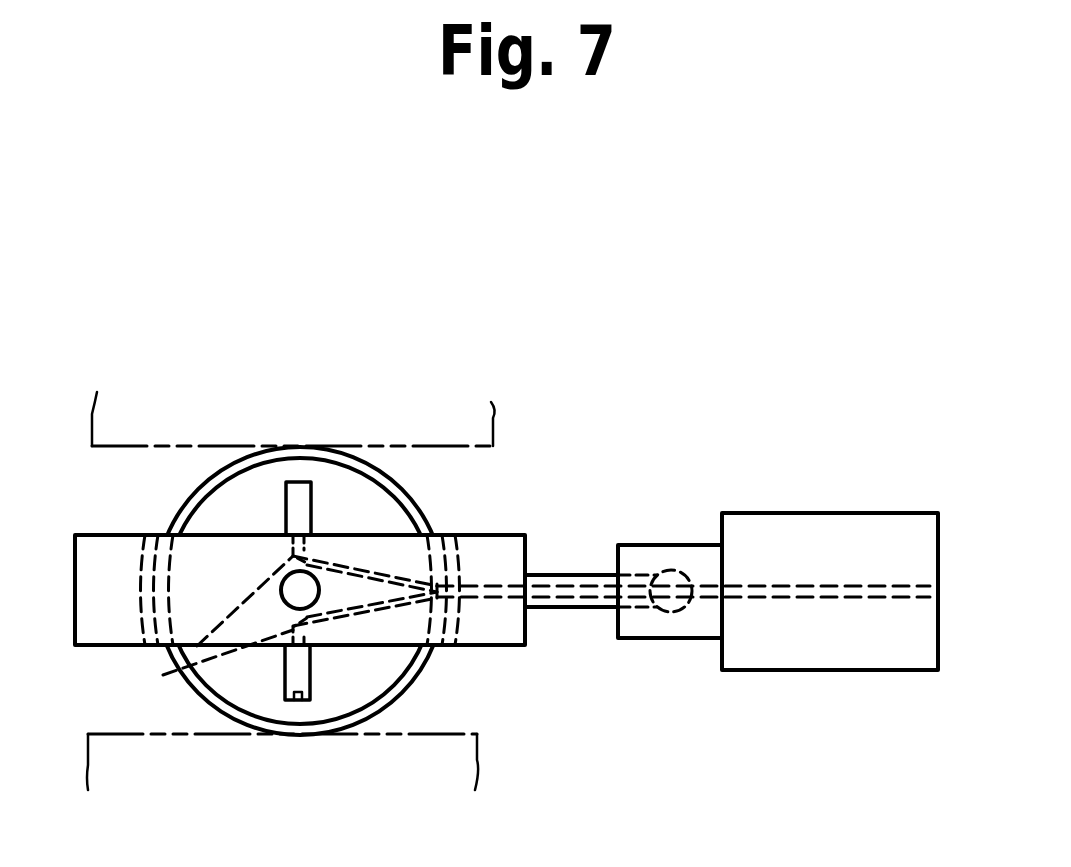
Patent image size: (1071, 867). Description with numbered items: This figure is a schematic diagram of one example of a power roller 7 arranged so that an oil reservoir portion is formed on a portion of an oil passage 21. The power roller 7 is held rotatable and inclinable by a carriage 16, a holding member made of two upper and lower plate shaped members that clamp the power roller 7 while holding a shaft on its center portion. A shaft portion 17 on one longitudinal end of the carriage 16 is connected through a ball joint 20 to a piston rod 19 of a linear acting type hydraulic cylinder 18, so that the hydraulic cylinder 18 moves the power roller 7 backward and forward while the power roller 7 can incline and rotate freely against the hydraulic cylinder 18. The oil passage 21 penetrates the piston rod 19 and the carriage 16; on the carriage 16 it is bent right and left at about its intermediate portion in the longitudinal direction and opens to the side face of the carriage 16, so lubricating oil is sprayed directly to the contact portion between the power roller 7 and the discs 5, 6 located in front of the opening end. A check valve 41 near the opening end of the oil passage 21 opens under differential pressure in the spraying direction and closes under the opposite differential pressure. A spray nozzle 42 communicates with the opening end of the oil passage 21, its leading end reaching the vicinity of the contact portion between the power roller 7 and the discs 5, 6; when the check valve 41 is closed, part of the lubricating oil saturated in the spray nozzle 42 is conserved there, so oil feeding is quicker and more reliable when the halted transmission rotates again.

The disc 5 is at (479, 409).
The disc 6 is at (462, 765).
The power roller 7 is at (240, 503).
The carriage 16 is at (75, 545).
The shaft portion 17 is at (574, 610).
The hydraulic cylinder 18 is at (818, 513).
The piston rod 19 is at (648, 547).
The ball joint 20 is at (672, 613).
The oil passage 21 is at (377, 567).
The check valve 41 is at (196, 660).
The spray nozzle 42 is at (303, 488).